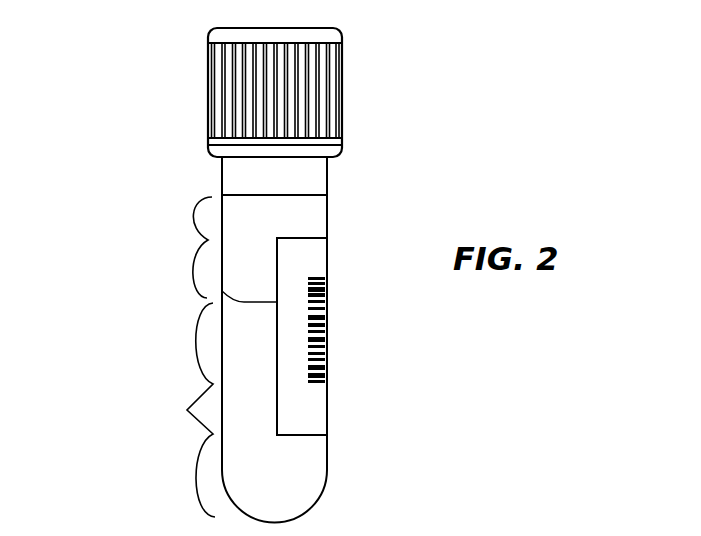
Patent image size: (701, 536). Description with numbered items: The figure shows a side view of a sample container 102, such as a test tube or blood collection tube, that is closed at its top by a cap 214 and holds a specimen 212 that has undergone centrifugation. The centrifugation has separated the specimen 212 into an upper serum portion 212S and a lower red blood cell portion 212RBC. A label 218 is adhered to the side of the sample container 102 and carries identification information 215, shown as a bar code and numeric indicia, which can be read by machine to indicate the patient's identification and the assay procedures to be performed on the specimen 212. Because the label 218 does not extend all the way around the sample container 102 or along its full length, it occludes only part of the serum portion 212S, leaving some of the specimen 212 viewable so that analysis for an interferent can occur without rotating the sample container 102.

The sample container 102 is at (170, 103).
The cap 214 is at (342, 83).
The specimen 212 is at (157, 207).
The serum portion 212S is at (206, 241).
The red blood cell portion 212RBC is at (185, 409).
The label 218 is at (305, 238).
The identification information 215 is at (338, 325).